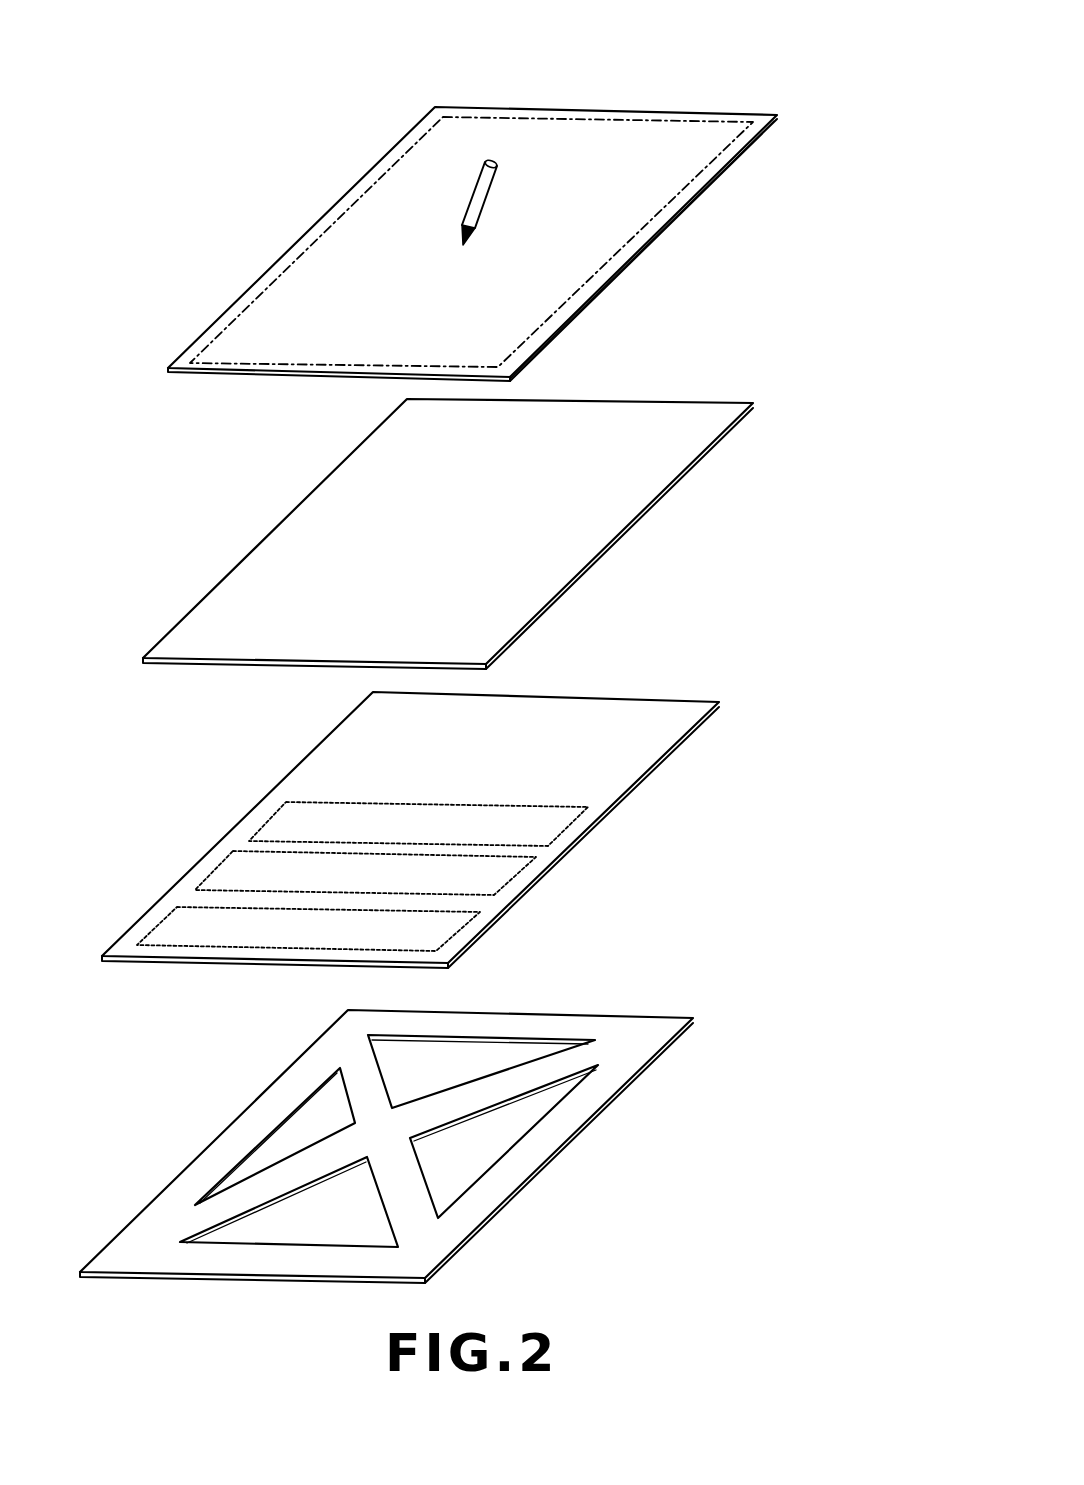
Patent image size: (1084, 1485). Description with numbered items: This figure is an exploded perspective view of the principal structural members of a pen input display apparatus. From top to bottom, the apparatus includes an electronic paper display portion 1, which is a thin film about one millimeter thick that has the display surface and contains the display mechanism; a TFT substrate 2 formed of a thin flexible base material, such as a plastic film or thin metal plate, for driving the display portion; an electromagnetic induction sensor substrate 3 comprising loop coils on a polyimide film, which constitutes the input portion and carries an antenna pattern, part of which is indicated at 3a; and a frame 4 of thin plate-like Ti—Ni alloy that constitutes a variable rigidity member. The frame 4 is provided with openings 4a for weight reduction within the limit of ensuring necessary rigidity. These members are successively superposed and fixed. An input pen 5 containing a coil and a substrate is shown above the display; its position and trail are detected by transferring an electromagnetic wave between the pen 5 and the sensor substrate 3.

The electronic paper display portion 1 is at (677, 160).
The TFT substrate 2 is at (661, 435).
The sensor substrate 3 is at (414, 770).
The antenna pattern 3a is at (285, 818).
The frame 4 is at (391, 1099).
The openings 4a is at (473, 1147).
The input pen 5 is at (465, 192).